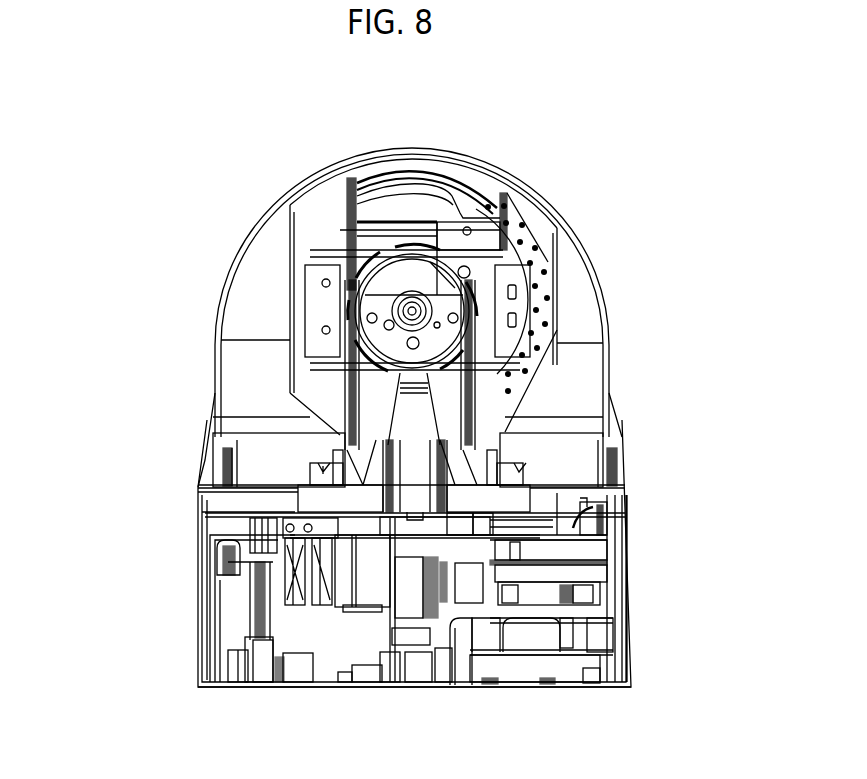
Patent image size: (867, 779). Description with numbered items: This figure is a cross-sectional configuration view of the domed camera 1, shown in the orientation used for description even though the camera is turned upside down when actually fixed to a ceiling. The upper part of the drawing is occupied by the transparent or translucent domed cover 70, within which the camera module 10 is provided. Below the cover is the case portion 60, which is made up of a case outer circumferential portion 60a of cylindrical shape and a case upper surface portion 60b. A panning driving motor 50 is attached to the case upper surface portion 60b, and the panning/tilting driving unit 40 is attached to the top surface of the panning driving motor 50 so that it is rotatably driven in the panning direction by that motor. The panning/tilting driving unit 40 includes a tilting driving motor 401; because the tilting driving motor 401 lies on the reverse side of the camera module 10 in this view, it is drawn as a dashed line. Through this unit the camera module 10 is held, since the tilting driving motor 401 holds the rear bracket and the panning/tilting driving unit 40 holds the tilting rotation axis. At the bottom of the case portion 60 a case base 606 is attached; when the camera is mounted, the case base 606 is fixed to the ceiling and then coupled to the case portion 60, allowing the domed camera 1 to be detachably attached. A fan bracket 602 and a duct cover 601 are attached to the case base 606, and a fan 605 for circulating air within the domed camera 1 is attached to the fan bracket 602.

The domed camera 1 is at (300, 104).
The camera module 10 is at (287, 313).
The tilting driving motor 401 is at (377, 262).
The panning/tilting driving unit 40 is at (317, 442).
The case portion 60 is at (138, 437).
The case outer circumferential portion 60a is at (197, 542).
The case upper surface portion 60b is at (272, 517).
The duct cover 601 is at (583, 508).
The fan bracket 602 is at (485, 550).
The fan 605 is at (527, 585).
The case base 606 is at (267, 683).
The panning driving motor 50 is at (382, 538).
The domed cover 70 is at (608, 321).